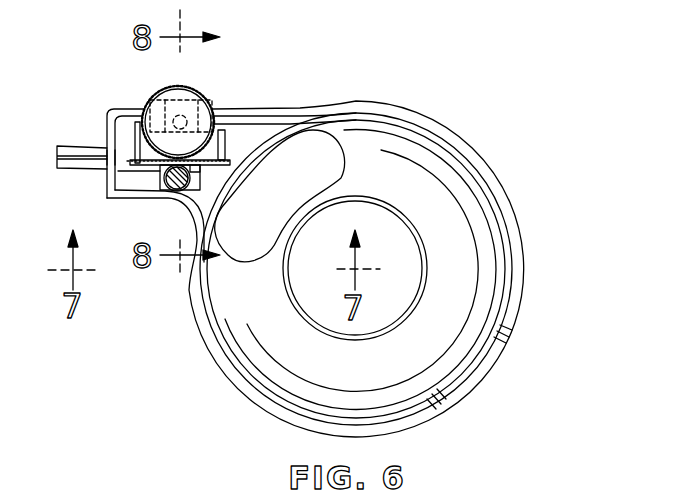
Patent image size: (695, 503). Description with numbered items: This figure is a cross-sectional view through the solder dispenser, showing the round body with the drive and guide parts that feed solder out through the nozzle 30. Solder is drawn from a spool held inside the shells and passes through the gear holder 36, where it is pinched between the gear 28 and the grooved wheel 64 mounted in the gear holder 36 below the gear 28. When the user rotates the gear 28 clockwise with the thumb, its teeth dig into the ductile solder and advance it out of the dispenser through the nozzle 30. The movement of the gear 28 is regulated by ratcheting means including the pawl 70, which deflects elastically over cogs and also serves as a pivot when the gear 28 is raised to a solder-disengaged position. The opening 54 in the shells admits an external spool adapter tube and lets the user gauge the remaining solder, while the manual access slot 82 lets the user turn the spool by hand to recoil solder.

The gear 28 is at (202, 97).
The nozzle 30 is at (68, 144).
The gear holder 36 is at (225, 143).
The opening 54 is at (475, 375).
The grooved wheel 64 is at (157, 182).
The pawl 70 is at (142, 130).
The manual access slot 82 is at (313, 158).